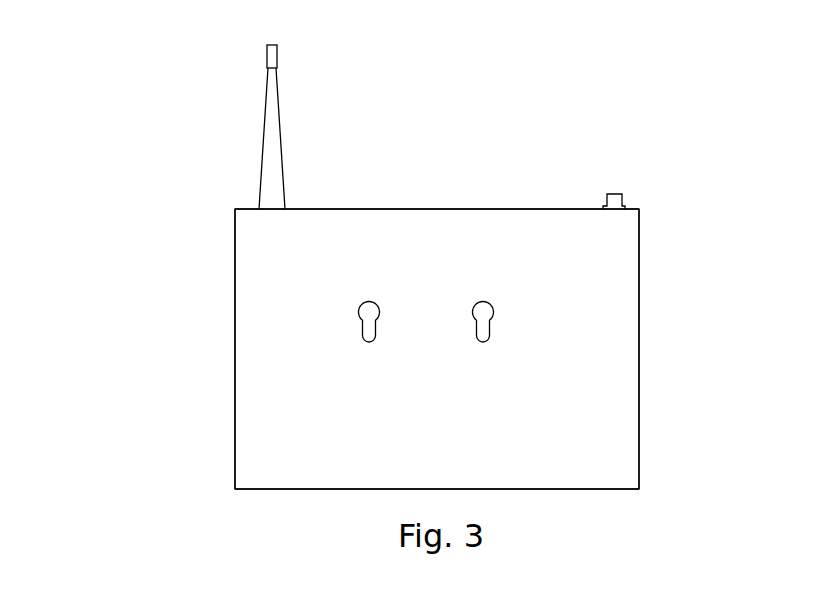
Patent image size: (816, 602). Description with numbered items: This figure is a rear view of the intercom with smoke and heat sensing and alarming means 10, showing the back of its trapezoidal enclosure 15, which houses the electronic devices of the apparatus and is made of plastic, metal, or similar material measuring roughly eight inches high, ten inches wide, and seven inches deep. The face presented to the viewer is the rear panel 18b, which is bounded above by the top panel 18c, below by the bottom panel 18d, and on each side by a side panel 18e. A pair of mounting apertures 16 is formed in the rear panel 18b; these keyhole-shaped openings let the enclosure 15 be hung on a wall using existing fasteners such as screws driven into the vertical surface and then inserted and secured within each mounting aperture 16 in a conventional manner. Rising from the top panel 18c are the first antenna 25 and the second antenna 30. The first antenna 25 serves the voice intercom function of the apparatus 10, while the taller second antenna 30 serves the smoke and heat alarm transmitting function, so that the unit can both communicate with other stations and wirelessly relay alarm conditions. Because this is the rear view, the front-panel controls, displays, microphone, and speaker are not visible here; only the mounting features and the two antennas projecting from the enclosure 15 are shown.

The intercom with smoke and heat sensing and alarming means 10 is at (117, 99).
The enclosure 15 is at (668, 399).
The mounting aperture 16 is at (480, 328).
The rear panel 18b is at (627, 359).
The top panel 18c is at (448, 209).
The bottom panel 18d is at (598, 490).
The side panel 18e is at (234, 289).
The first antenna 25 is at (615, 197).
The second antenna 30 is at (272, 142).